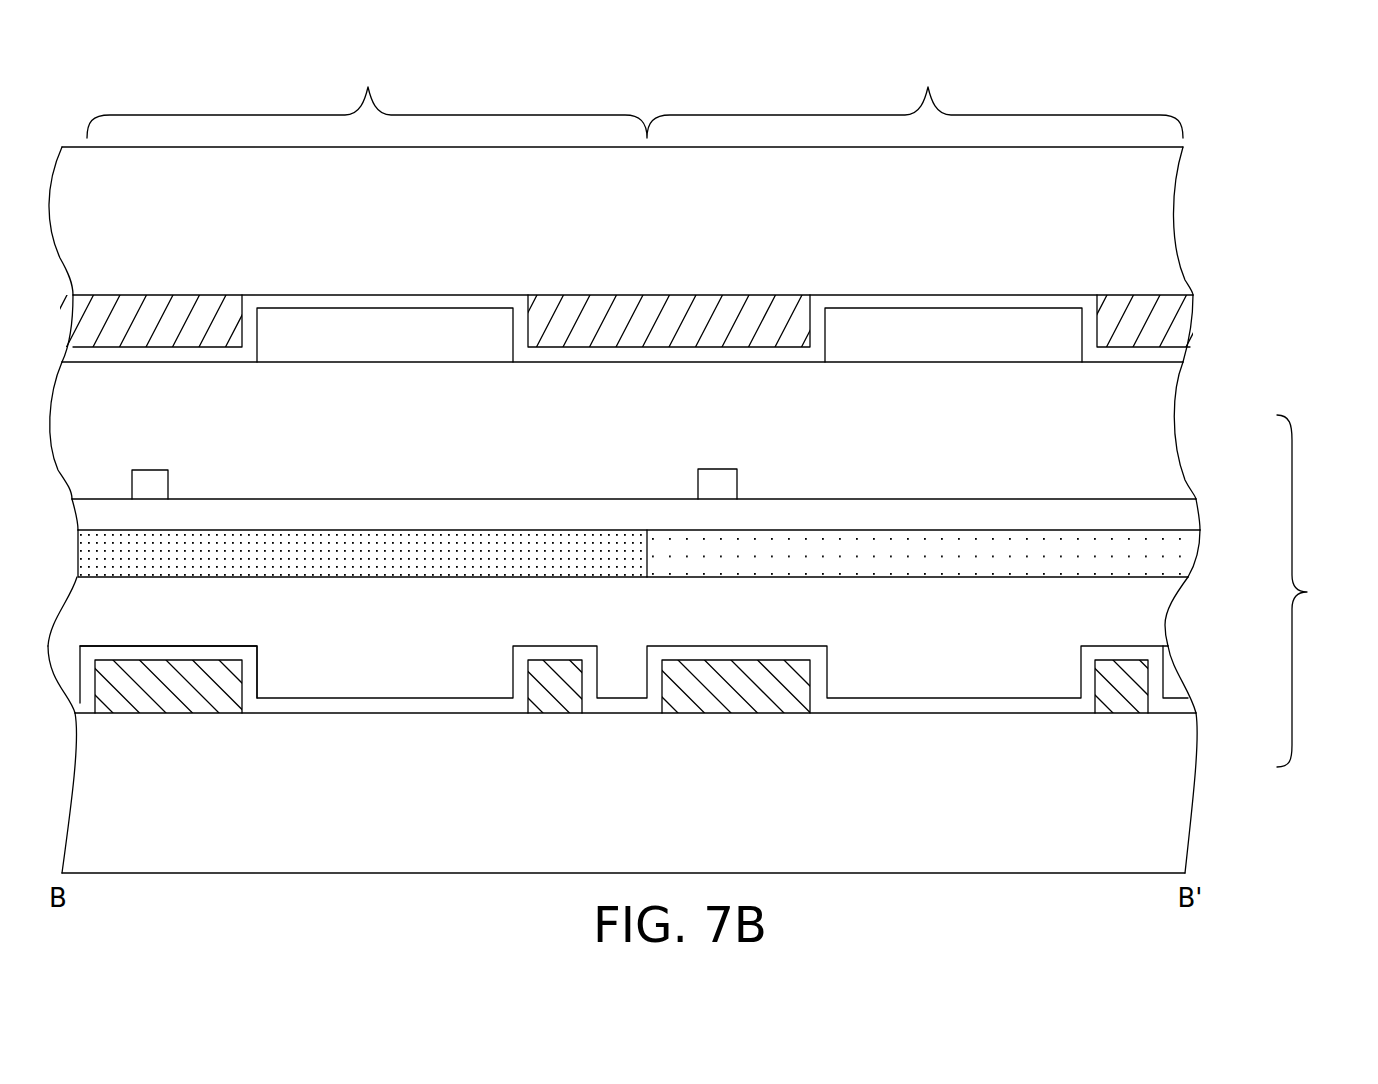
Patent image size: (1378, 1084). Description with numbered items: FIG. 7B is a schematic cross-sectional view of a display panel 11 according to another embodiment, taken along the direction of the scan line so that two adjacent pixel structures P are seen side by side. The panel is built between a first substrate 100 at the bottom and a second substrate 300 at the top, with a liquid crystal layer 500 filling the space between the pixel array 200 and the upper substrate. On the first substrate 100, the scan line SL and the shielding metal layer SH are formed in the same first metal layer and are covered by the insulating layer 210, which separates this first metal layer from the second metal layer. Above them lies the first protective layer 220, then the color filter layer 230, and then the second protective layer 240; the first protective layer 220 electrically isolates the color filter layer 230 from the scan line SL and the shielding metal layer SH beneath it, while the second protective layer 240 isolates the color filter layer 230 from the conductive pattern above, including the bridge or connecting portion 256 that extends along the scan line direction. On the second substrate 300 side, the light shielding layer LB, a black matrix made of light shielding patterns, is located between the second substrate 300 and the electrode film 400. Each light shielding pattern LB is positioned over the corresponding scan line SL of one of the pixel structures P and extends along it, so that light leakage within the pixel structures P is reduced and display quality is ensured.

The display panel 11 is at (1266, 894).
The first substrate 100 is at (1163, 799).
The pixel array 200 is at (1316, 591).
The insulating layer 210 is at (1175, 713).
The first protective layer 220 is at (1160, 603).
The color filter layer 230 is at (1173, 556).
The second protective layer 240 is at (1180, 514).
The bridge portion 256 is at (725, 483).
The second substrate 300 is at (1156, 193).
The electrode film 400 is at (1168, 353).
The liquid crystal layer 500 is at (1168, 400).
The light shielding layer LB is at (163, 308).
The scan line SL is at (805, 675).
The shielding metal layer SH is at (1137, 679).
The pixel structure P is at (635, 97).